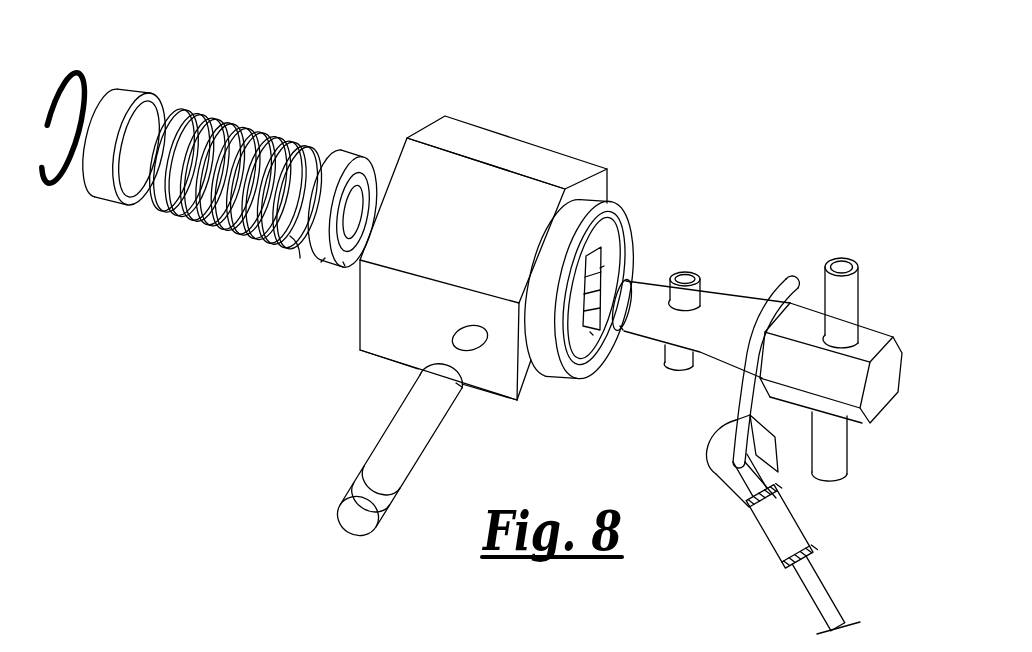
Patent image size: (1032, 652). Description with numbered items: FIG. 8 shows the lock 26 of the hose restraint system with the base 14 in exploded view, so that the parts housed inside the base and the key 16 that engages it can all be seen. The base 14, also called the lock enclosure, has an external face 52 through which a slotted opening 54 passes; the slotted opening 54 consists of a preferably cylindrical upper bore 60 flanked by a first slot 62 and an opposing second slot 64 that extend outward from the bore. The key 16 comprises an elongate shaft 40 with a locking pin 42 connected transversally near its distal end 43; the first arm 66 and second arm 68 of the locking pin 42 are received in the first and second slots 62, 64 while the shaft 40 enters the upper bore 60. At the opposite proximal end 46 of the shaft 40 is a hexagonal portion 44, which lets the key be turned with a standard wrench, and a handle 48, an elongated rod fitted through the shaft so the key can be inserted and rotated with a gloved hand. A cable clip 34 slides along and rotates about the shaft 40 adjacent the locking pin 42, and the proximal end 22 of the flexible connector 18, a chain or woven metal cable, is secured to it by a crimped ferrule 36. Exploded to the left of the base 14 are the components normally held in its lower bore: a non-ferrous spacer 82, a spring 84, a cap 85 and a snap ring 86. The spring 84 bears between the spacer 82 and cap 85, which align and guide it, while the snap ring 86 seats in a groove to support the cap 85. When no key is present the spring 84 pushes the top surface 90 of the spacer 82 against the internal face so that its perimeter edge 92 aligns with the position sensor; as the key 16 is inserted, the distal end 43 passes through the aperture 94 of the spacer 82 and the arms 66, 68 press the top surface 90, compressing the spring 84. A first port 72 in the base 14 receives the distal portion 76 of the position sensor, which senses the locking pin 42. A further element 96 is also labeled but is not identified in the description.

The base 14 is at (492, 113).
The key 16 is at (838, 182).
The flexible connector 18 is at (813, 604).
The proximal end 22 is at (772, 467).
The lock 26 is at (592, 94).
The cable clip 34 is at (733, 418).
The crimped ferrule 36 is at (765, 547).
The elongate shaft 40 is at (735, 310).
The locking pin 42 is at (700, 280).
The distal end 43 is at (624, 330).
The hexagonal portion 44 is at (872, 335).
The proximal end 46 is at (878, 400).
The handle 48 is at (830, 258).
The external face 52 is at (577, 352).
The slotted opening 54 is at (614, 270).
The upper bore 60 is at (600, 282).
The first slot 62 is at (592, 330).
The second slot 64 is at (598, 249).
The first arm 66 is at (683, 368).
The second arm 68 is at (684, 272).
The first port 72 is at (452, 342).
The distal portion 76 is at (463, 388).
The spacer 82 is at (350, 158).
The spring 84 is at (240, 120).
The cap 85 is at (135, 87).
The snap ring 86 is at (80, 70).
The top surface 90 is at (343, 258).
The perimeter edge 92 is at (313, 258).
The aperture 94 is at (360, 196).
The spring end 96 is at (297, 245).